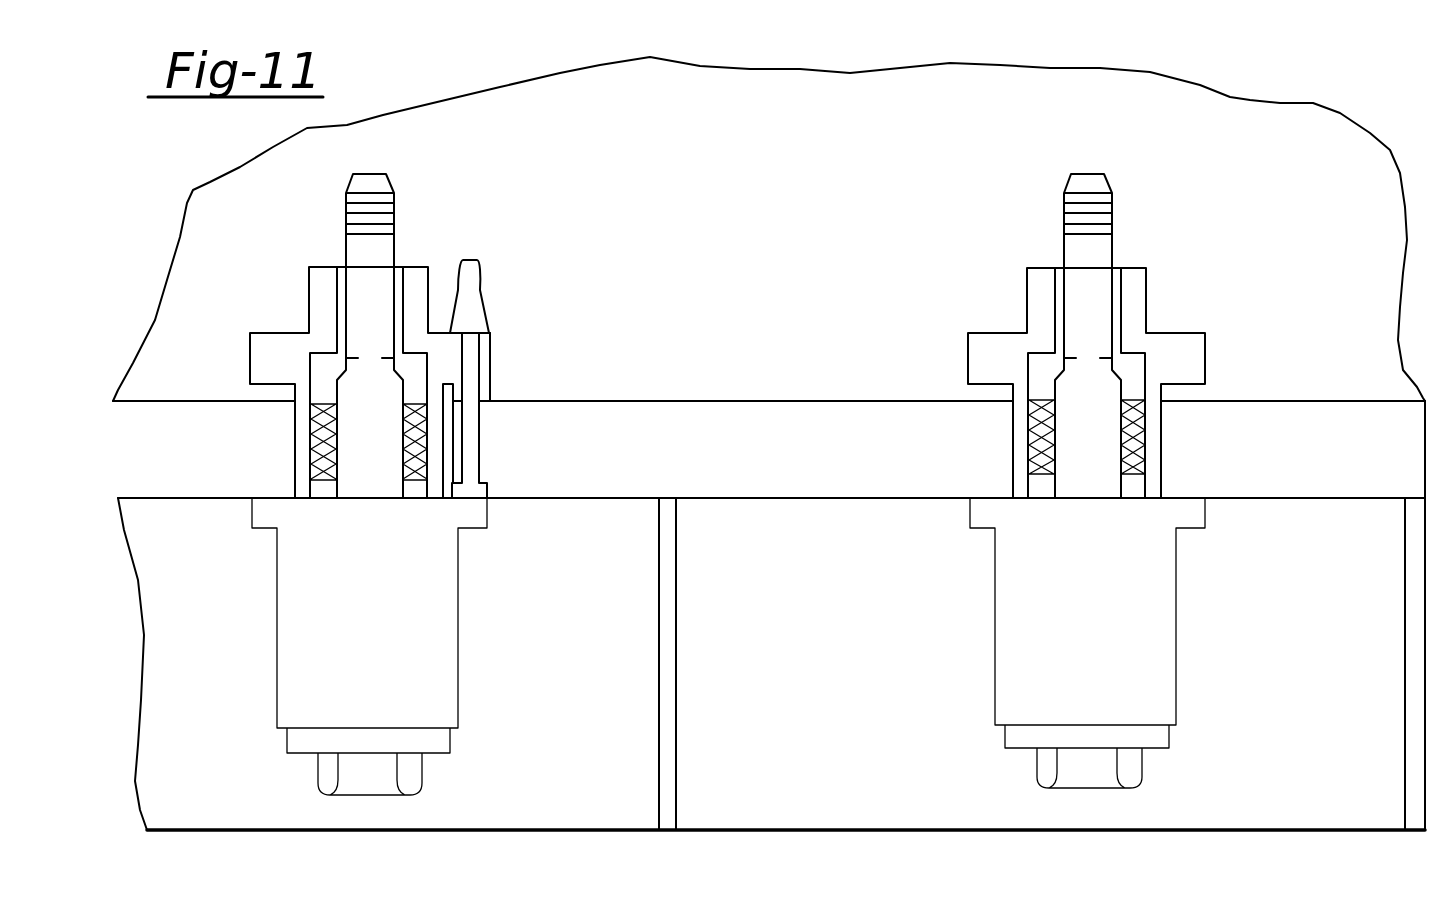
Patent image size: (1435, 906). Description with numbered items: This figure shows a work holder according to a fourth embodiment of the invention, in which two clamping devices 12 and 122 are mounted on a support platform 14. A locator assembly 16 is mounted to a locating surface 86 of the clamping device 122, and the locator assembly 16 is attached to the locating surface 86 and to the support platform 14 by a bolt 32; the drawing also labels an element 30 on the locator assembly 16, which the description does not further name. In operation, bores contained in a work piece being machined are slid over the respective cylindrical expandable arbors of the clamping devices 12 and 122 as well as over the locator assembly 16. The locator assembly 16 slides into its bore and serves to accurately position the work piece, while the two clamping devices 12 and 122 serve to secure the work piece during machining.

The clamping device 12 is at (1170, 315).
The support platform 14 is at (766, 410).
The locator assembly 16 is at (497, 280).
The locating pin head 30 is at (466, 273).
The bolt 32 is at (470, 360).
The locating surface 86 is at (490, 333).
The clamping device 122 is at (448, 180).